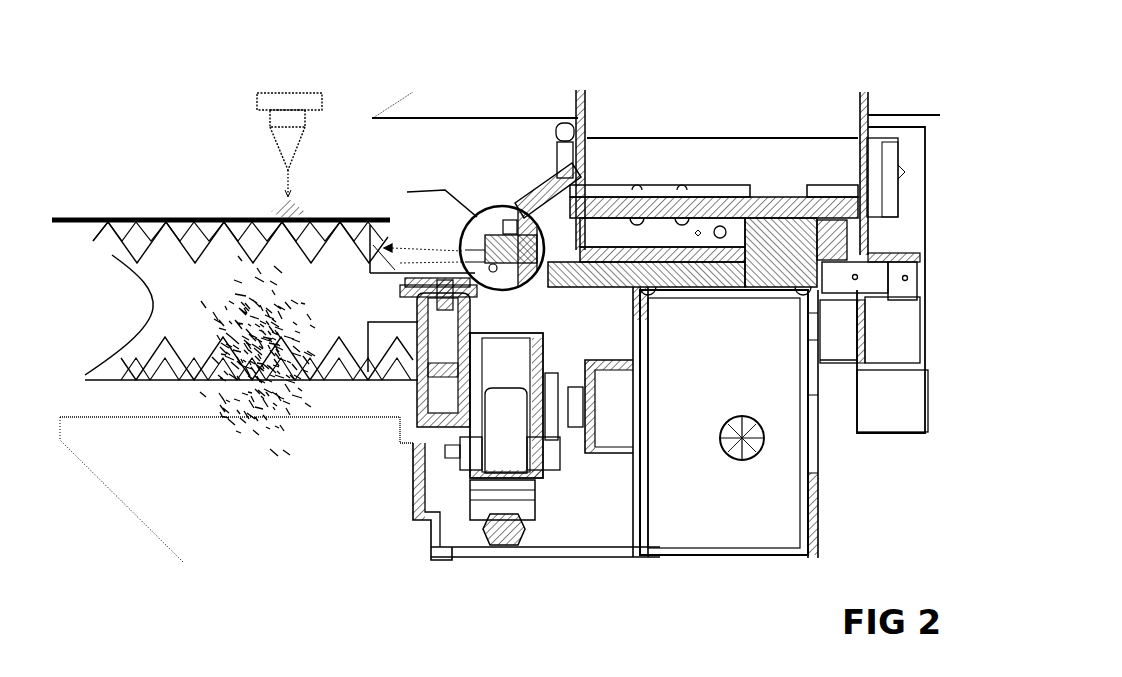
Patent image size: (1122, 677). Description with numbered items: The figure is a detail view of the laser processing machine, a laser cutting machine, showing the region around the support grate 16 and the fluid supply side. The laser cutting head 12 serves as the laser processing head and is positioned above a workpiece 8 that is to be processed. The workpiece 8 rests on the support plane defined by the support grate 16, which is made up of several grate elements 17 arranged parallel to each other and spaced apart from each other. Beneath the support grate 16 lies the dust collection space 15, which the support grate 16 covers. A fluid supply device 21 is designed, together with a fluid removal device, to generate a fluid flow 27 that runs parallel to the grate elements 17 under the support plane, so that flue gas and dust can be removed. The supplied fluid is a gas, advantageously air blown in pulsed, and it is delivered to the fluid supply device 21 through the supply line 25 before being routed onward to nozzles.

The workpiece 8 is at (230, 218).
The laser cutting head 12 is at (287, 142).
The dust collection space 15 is at (283, 544).
The support grate 16 is at (176, 284).
The grate elements 17 is at (163, 357).
The fluid supply device 21 is at (505, 160).
The supply line 25 is at (545, 180).
The fluid flow 27 is at (405, 230).